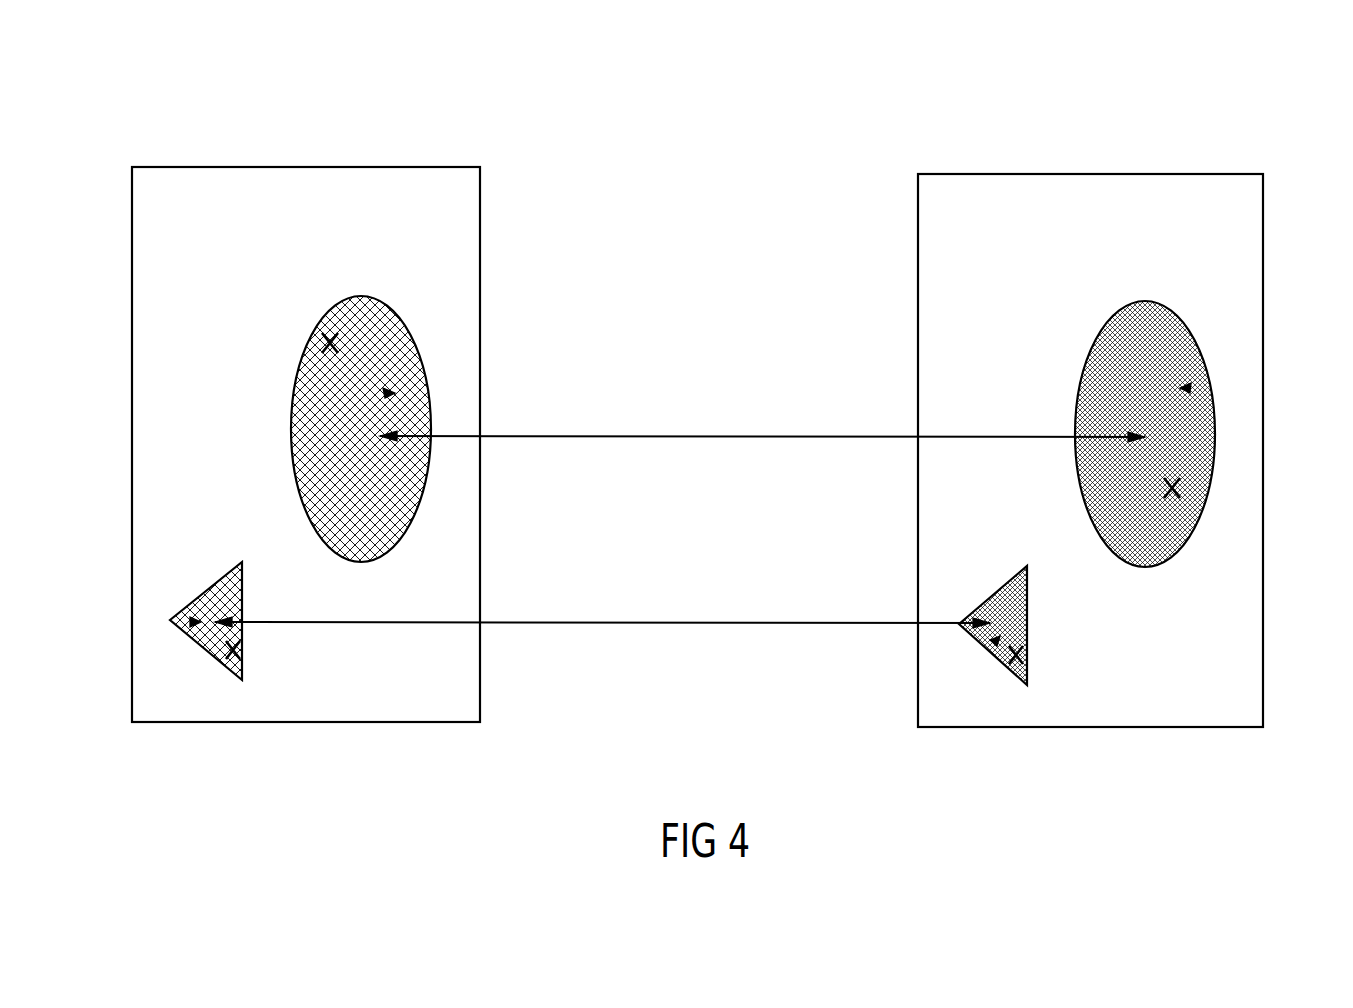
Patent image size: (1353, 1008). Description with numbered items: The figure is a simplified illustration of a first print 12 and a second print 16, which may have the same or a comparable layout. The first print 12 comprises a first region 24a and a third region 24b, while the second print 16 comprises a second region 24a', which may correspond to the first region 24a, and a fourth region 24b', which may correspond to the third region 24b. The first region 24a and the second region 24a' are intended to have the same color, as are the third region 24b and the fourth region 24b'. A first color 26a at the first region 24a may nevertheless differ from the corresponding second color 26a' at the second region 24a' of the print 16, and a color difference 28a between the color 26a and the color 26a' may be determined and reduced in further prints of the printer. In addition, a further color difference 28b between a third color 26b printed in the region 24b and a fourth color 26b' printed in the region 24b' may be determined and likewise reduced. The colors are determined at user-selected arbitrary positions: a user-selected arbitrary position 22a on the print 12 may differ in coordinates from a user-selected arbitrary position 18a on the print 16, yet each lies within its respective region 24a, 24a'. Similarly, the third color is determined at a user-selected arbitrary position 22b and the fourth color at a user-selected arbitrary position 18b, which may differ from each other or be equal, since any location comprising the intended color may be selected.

The first print 12 is at (300, 167).
The second print 16 is at (1093, 174).
The first region 24a is at (361, 309).
The second region 24a' is at (1148, 337).
The third region 24b is at (192, 673).
The fourth region 24b' is at (994, 676).
The user-selected arbitrary position 22a is at (322, 343).
The user-selected arbitrary position 22b is at (232, 660).
The user-selected arbitrary position 18a is at (1180, 488).
The user-selected arbitrary position 18b is at (1020, 660).
The first color 26a is at (471, 305).
The second color 26a' is at (1265, 342).
The third color 26b is at (130, 650).
The fourth color 26b' is at (929, 711).
The color difference 28a is at (720, 437).
The further color difference 28b is at (695, 622).